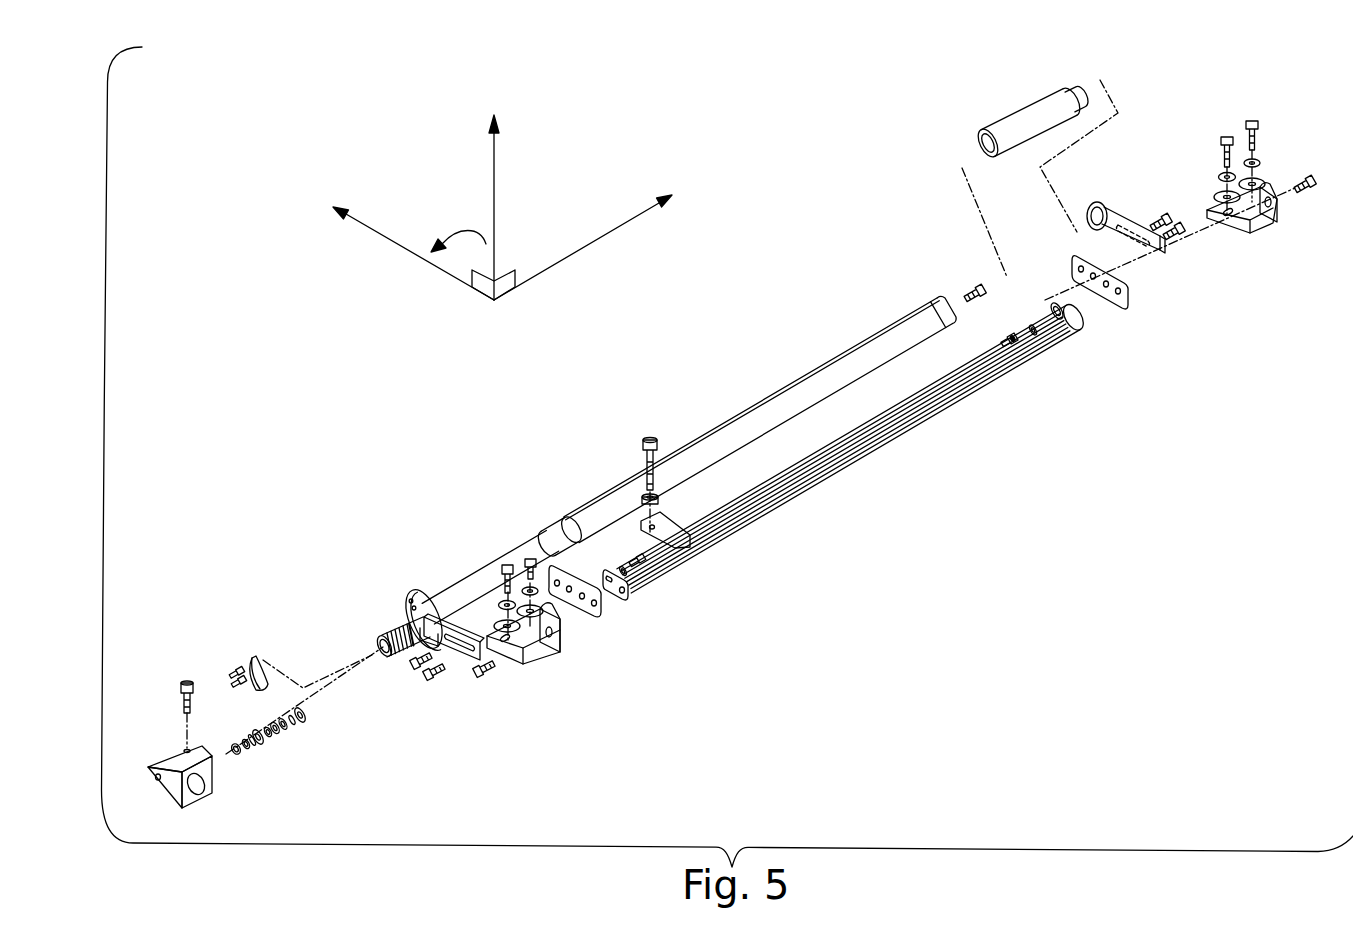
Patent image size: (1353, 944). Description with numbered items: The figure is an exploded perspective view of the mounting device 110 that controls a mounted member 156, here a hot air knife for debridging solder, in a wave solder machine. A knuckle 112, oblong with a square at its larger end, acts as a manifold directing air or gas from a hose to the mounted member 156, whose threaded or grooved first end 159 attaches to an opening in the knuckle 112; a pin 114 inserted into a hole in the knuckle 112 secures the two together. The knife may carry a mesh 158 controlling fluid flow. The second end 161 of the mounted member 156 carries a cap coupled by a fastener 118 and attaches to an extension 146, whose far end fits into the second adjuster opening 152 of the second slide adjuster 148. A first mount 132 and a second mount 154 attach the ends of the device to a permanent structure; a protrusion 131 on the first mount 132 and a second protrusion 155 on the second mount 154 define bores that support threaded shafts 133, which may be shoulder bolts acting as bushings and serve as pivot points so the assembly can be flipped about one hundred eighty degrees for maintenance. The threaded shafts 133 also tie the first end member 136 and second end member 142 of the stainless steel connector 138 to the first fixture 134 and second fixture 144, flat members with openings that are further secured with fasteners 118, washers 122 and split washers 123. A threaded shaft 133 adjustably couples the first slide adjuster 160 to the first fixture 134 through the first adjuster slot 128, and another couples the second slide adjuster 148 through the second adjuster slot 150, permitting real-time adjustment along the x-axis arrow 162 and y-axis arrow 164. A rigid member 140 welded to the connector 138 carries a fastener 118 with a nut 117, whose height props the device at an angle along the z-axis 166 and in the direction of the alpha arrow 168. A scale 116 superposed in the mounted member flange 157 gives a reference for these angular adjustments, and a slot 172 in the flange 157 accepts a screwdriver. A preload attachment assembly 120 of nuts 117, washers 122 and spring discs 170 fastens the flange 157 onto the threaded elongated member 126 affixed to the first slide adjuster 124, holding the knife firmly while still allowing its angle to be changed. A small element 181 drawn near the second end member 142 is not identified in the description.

The mounting device 110 is at (243, 296).
The knuckle 112 is at (175, 757).
The pin 114 is at (185, 682).
The scale 116 is at (257, 658).
The nut 117 is at (236, 754).
The fastener 118 is at (233, 670).
The preload attachment assembly 120 is at (345, 758).
The washer 122 is at (305, 718).
The split washer 123 is at (620, 568).
The first slide adjuster 124 is at (478, 658).
The elongated member 126 is at (418, 660).
The first adjuster slot 128 is at (460, 650).
The protrusion 131 is at (561, 652).
The first mount 132 is at (543, 665).
The threaded shaft 133 is at (433, 680).
The first fixture 134 is at (595, 614).
The first end member 136 is at (615, 599).
The connector 138 is at (784, 508).
The rigid member 140 is at (673, 527).
The second end member 142 is at (1056, 303).
The second fixture 144 is at (1120, 307).
The extension 146 is at (1025, 118).
The second slide adjuster 148 is at (1161, 246).
The second adjuster slot 150 is at (1128, 222).
The second adjuster opening 152 is at (1098, 205).
The second mount 154 is at (1255, 230).
The second protrusion 155 is at (1280, 220).
The mounted member 156 is at (778, 405).
The mounted member flange 157 is at (404, 619).
The mesh 158 is at (490, 570).
The first end 159 is at (386, 632).
The first slide adjuster 160 is at (419, 590).
The second end 161 is at (937, 295).
The x-axis arrow 162 is at (604, 237).
The y-axis arrow 164 is at (394, 243).
The z-axis 166 is at (493, 193).
The alpha arrow 168 is at (458, 230).
The spring discs 170 is at (278, 733).
The slot 172 is at (412, 600).
The set screw 181 is at (1007, 338).